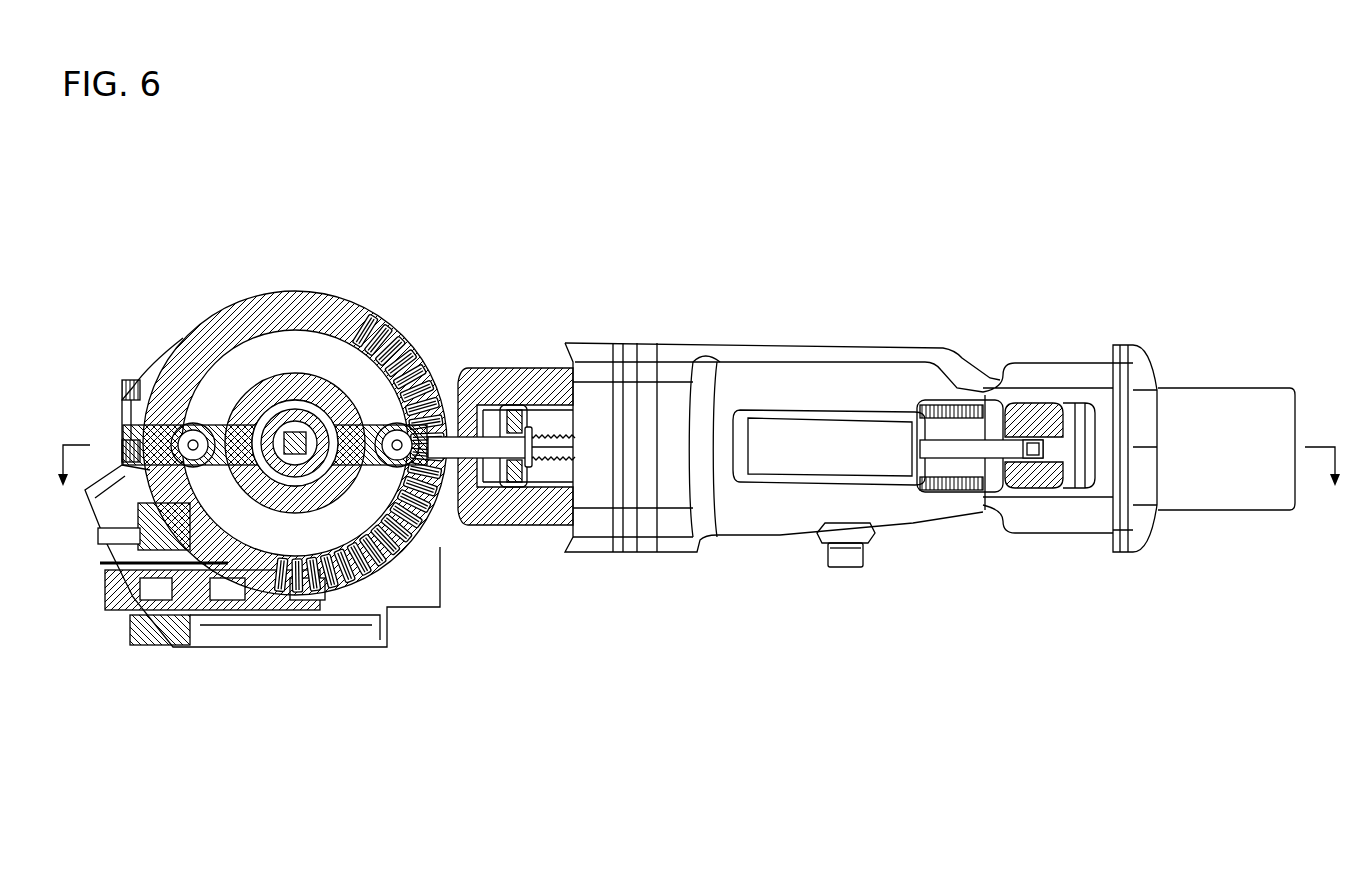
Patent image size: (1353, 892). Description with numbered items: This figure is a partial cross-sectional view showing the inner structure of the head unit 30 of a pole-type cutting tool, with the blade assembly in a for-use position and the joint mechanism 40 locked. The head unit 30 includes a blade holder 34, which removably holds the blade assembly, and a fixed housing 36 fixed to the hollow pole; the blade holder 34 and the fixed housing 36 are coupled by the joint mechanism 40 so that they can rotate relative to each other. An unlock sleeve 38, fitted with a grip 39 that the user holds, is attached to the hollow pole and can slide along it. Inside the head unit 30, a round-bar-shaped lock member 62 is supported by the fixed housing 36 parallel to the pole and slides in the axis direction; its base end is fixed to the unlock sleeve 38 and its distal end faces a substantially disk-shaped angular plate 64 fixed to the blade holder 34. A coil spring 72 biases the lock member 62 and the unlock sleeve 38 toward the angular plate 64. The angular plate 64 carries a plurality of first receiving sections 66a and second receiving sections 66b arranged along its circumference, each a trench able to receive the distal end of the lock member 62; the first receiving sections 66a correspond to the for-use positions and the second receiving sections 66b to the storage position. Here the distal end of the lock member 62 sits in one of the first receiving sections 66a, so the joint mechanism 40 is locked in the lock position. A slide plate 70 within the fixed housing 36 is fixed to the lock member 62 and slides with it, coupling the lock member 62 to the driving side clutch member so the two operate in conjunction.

The head unit 30 is at (1005, 292).
The blade holder 34 is at (413, 610).
The fixed housing 36 is at (913, 523).
The unlock sleeve 38 is at (1130, 345).
The grip 39 is at (1210, 388).
The joint mechanism 40 is at (270, 442).
The lock member 62 is at (493, 460).
The angular plate 64 is at (393, 297).
The first receiving sections 66a is at (455, 368).
The second receiving sections 66b is at (122, 437).
The slide plate 70 is at (540, 427).
The coil spring 72 is at (545, 462).